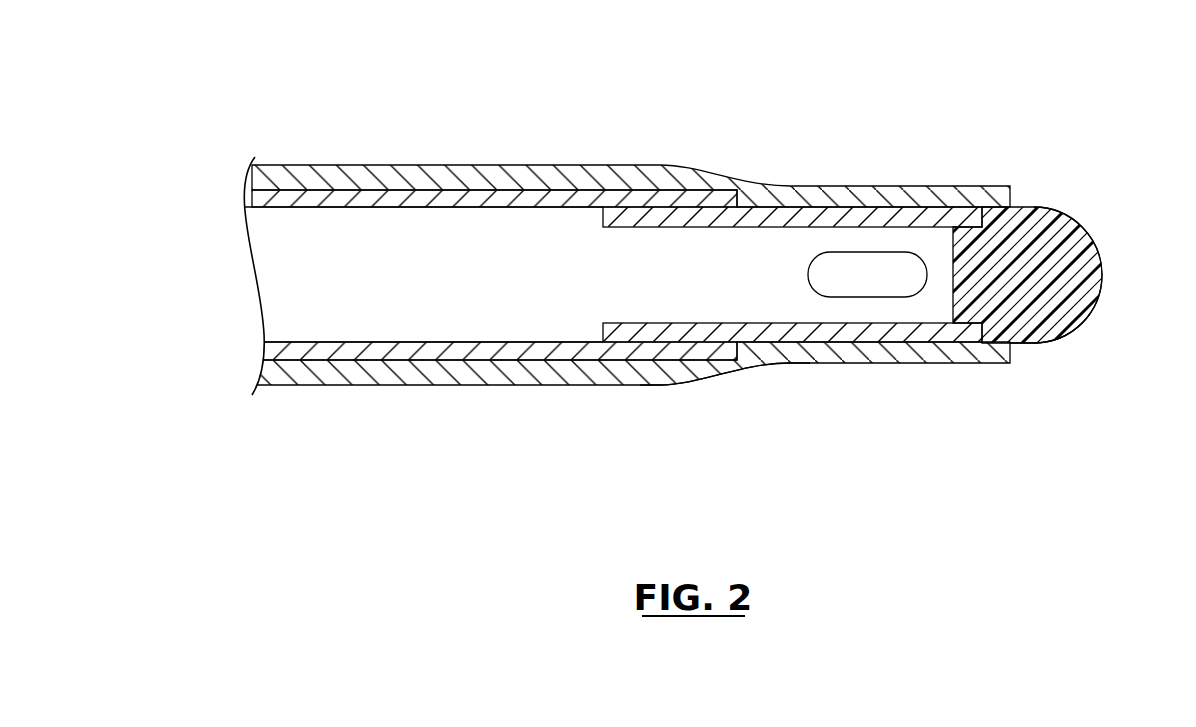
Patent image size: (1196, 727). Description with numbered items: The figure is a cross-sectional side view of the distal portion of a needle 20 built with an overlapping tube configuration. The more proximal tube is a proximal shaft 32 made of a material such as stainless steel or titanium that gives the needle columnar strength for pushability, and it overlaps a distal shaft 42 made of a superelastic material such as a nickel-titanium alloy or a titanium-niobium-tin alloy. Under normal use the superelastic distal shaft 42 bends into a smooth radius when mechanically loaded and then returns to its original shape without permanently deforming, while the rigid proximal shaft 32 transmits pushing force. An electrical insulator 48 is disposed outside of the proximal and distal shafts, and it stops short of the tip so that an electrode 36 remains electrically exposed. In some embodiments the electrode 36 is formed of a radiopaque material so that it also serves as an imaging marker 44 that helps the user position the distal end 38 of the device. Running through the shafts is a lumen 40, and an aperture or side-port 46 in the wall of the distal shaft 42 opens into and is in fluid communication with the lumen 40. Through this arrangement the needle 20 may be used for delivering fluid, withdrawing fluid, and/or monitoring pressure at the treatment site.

The needle 20 is at (718, 289).
The proximal shaft 32 is at (648, 197).
The electrode 36 is at (1090, 232).
The distal end 38 is at (1075, 343).
The lumen 40 is at (393, 260).
The distal shaft 42 is at (903, 215).
The imaging marker 44 is at (1045, 245).
The side-port 46 is at (870, 282).
The electrical insulator 48 is at (660, 380).